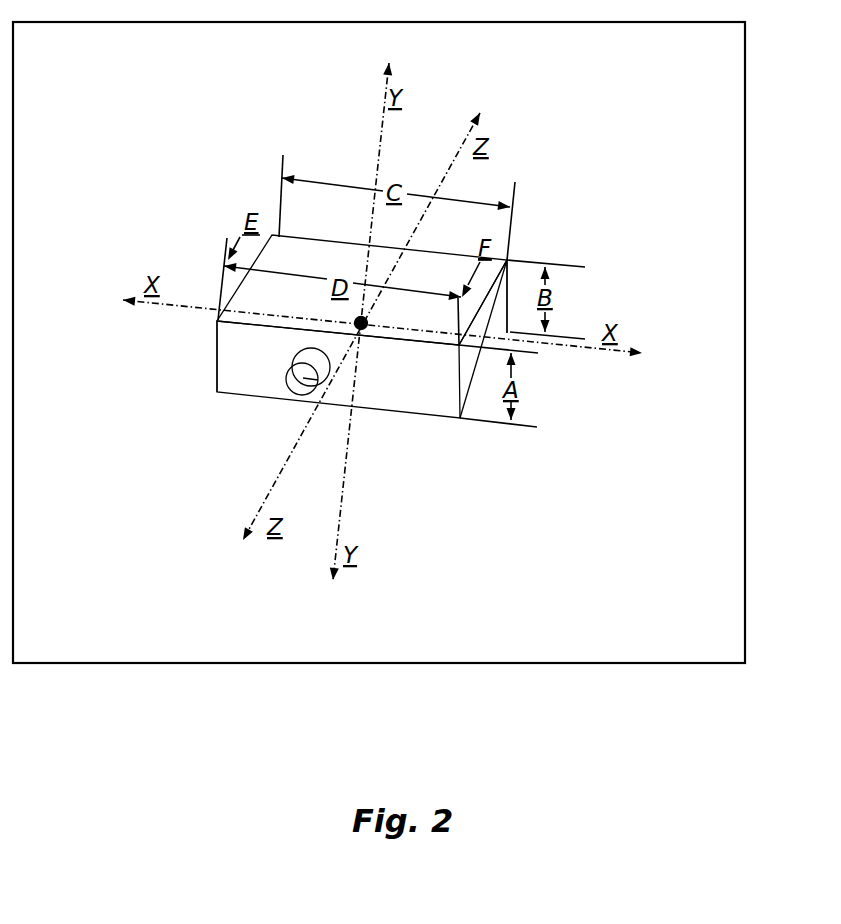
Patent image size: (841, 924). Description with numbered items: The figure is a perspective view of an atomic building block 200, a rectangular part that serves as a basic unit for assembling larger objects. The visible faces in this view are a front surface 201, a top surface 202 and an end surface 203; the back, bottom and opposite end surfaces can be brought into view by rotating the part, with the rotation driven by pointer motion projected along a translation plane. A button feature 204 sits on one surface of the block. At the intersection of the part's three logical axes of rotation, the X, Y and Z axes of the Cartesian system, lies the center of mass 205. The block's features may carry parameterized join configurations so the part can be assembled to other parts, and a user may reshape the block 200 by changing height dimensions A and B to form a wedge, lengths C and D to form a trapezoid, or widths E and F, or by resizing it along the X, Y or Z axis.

The atomic building block 200 is at (192, 408).
The front surface 201 is at (435, 393).
The top surface 202 is at (289, 266).
The end surface 203 is at (485, 320).
The button feature 204 is at (287, 378).
The center of mass 205 is at (365, 327).